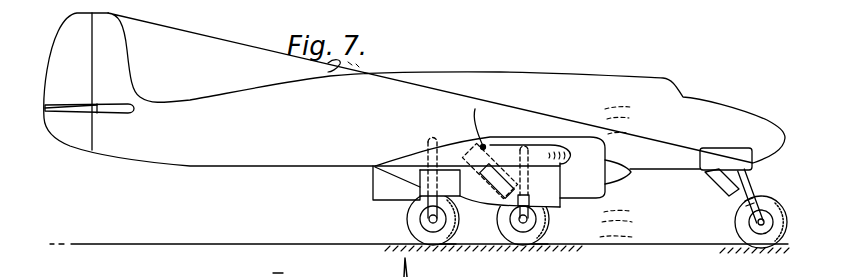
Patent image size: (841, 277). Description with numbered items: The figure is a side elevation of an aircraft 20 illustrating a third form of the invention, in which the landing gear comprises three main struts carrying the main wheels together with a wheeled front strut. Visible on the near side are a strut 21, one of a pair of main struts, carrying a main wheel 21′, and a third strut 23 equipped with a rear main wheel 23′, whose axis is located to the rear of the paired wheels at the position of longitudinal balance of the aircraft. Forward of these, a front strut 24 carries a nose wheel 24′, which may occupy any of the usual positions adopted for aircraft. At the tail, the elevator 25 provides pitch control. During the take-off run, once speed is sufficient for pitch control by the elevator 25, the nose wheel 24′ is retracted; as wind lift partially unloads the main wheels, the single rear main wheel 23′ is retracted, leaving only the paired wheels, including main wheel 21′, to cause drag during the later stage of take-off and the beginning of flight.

The aircraft 20 is at (235, 102).
The strut 21 is at (543, 195).
The main wheel 21' is at (555, 260).
The third strut 23 is at (409, 192).
The rear main wheel 23' is at (467, 260).
The front strut 24 is at (750, 196).
The nose wheel 24' is at (737, 222).
The elevator 25 is at (67, 110).